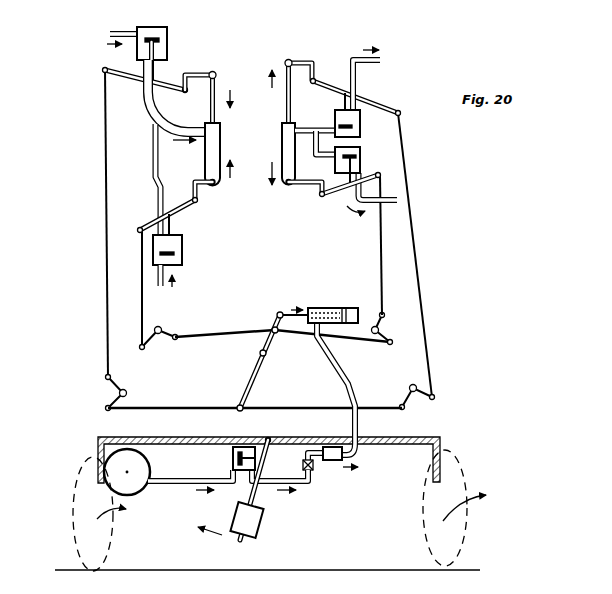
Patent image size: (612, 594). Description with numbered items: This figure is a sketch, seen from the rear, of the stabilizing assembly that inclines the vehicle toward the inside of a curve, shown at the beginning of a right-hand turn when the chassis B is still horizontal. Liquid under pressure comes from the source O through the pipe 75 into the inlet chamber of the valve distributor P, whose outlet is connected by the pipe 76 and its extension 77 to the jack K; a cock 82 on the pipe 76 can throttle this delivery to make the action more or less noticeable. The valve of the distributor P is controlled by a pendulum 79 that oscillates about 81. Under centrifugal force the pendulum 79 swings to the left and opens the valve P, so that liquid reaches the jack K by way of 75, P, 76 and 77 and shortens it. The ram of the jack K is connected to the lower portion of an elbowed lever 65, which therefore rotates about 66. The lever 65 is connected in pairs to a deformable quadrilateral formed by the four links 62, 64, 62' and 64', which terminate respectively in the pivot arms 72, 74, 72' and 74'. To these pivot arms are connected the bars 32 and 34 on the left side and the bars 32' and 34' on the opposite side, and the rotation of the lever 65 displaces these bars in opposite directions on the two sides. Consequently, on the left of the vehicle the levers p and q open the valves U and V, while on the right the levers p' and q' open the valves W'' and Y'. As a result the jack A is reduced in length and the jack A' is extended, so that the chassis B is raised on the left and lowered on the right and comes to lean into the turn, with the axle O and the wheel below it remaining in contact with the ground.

The bar 34 is at (79, 223).
The bar 34' is at (431, 255).
The bar 32 is at (165, 288).
The bar 32' is at (358, 245).
The link 62 is at (225, 320).
The link 62' is at (332, 347).
The pivot arm 72 is at (169, 348).
The pivot arm 72' is at (395, 329).
The link 64 is at (174, 392).
The link 64' is at (321, 391).
The pivot arm 74 is at (97, 393).
The pivot arm 74' is at (436, 393).
The elbowed lever 65 is at (279, 338).
The pivot 66 is at (267, 355).
The pipe extension 77 is at (334, 379).
The pendulum pivot 81 is at (267, 438).
The pipe 75 is at (185, 479).
The pipe 76 is at (301, 481).
The pendulum 79 is at (253, 521).
The cock 82 is at (317, 467).
The valve V is at (168, 36).
The lever q is at (126, 82).
The lever q' is at (356, 81).
The jack A is at (218, 129).
The jack A' is at (284, 123).
The lever p is at (178, 207).
The lever p' is at (335, 204).
The valve U is at (182, 258).
The valve Y' is at (342, 94).
The valve W'' is at (358, 171).
The jack K is at (333, 307).
The chassis B is at (97, 447).
The pressure source O is at (122, 470).
The valve distributor P is at (232, 462).